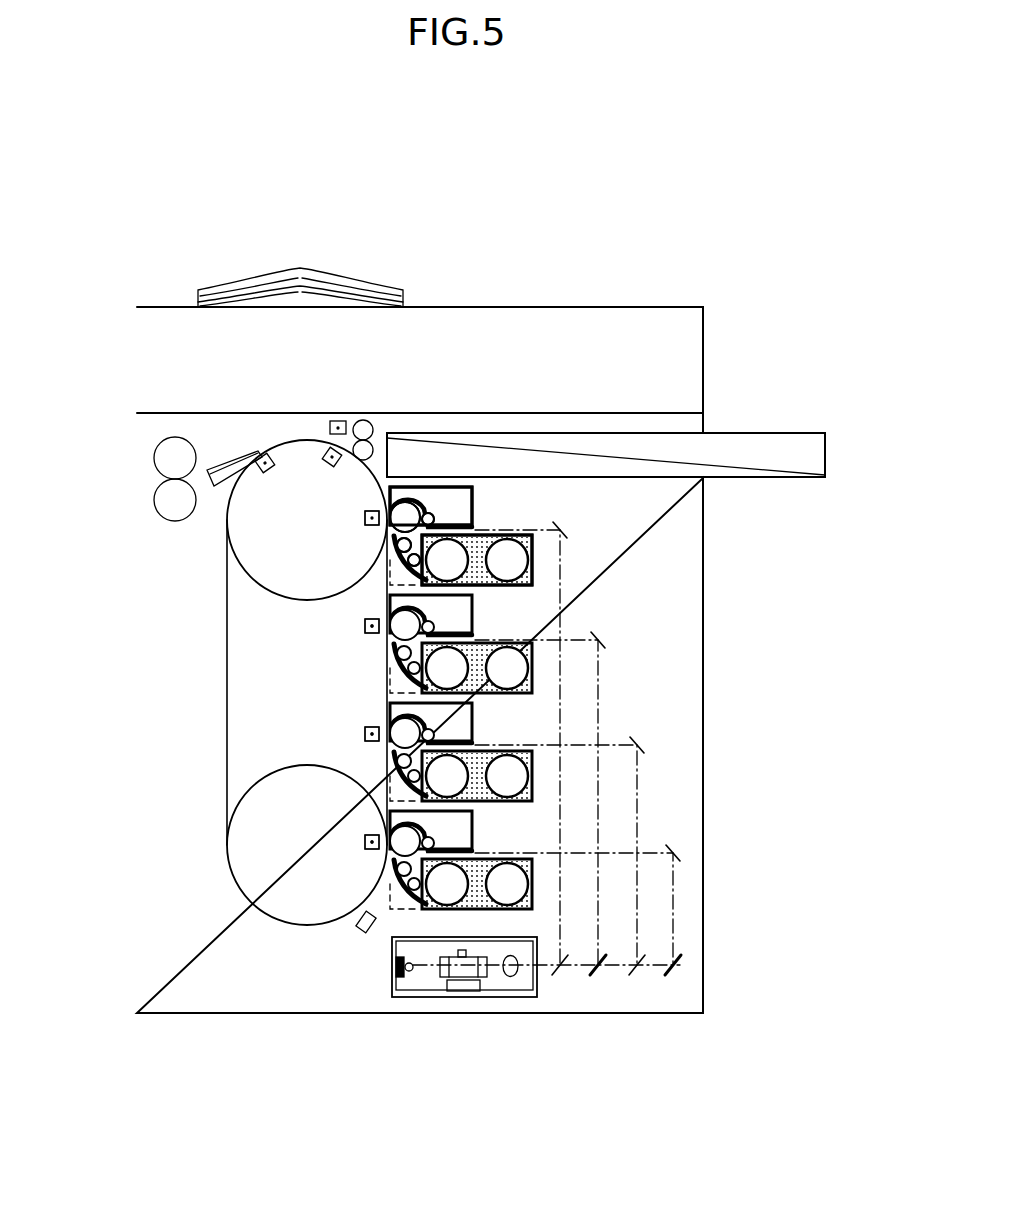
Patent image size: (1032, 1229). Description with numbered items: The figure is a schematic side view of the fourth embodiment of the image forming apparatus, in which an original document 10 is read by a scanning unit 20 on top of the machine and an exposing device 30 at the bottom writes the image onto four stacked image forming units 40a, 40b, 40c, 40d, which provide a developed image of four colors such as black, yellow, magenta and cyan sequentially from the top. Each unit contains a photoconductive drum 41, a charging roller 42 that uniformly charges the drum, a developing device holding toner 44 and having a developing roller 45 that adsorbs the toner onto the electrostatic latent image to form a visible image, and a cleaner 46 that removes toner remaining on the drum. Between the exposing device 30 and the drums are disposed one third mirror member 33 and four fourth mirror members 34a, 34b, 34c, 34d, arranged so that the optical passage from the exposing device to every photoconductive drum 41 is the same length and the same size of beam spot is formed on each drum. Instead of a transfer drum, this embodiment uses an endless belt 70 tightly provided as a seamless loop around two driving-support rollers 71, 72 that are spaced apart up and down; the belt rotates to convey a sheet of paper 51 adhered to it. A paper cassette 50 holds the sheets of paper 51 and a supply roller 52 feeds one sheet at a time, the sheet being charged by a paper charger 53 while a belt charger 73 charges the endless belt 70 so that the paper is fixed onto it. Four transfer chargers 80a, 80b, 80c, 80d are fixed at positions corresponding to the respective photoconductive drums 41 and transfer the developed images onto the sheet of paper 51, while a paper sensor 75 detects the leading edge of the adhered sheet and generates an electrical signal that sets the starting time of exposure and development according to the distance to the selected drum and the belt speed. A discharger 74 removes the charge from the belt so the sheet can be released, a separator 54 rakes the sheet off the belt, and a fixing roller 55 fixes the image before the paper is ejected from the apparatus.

The original document 10 is at (355, 283).
The scanning unit 20 is at (712, 363).
The exposing device 30 is at (536, 1014).
The third mirror member 33 is at (556, 968).
The fourth mirror member 34a is at (564, 530).
The fourth mirror member 34b is at (600, 640).
The fourth mirror member 34c is at (641, 744).
The fourth mirror member 34d is at (681, 853).
The image forming unit 40a is at (410, 506).
The image forming unit 40b is at (406, 655).
The image forming unit 40c is at (405, 758).
The image forming unit 40d is at (408, 908).
The photoconductive drum 41 is at (403, 512).
The charging roller 42 is at (428, 516).
The toner 44 is at (480, 570).
The developing roller 45 is at (386, 545).
The cleaner 46 is at (472, 505).
The paper cassette 50 is at (660, 424).
The sheet of paper 51 is at (538, 457).
The supply roller 52 is at (361, 420).
The paper charger 53 is at (338, 420).
The separator 54 is at (228, 464).
The fixing roller 55 is at (157, 459).
The endless belt 70 is at (228, 682).
The driving-support roller 71 is at (247, 578).
The driving-support roller 72 is at (247, 795).
The belt charger 73 is at (330, 455).
The discharger 74 is at (276, 464).
The paper sensor 75 is at (358, 930).
The transfer charger 80a is at (372, 518).
The transfer charger 80b is at (376, 676).
The transfer charger 80c is at (365, 735).
The transfer charger 80d is at (365, 843).